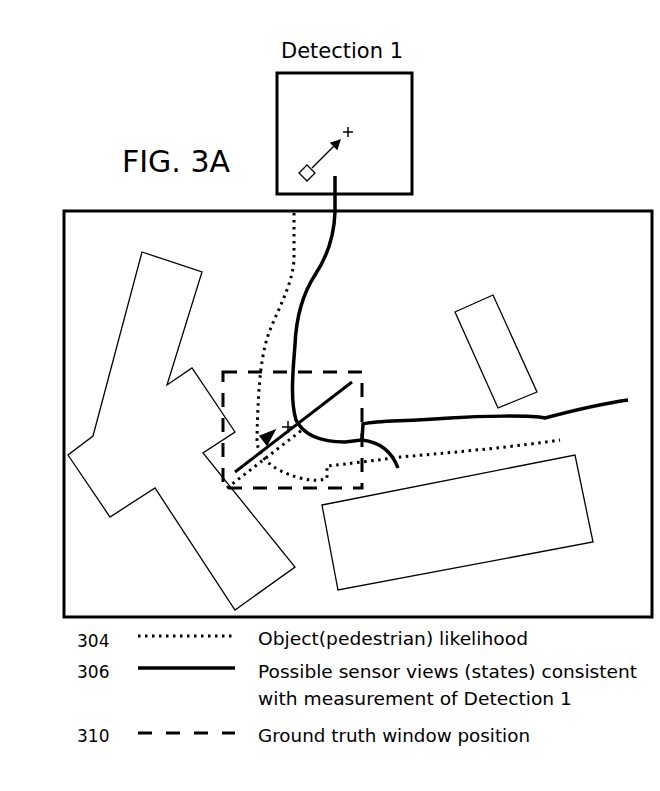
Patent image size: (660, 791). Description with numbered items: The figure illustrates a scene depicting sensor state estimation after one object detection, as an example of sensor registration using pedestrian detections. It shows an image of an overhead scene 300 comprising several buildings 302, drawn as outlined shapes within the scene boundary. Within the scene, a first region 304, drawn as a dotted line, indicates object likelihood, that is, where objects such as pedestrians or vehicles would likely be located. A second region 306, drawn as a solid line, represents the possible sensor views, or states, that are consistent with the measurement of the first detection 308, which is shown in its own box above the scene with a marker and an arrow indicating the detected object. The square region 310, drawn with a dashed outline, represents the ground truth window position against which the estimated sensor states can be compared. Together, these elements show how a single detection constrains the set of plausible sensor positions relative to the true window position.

The overhead scene 300 is at (493, 210).
The buildings 302 is at (128, 300).
The first region 304 is at (283, 296).
The second region 306 is at (312, 290).
The Detection 1 308 is at (412, 128).
The square region 310 is at (363, 383).